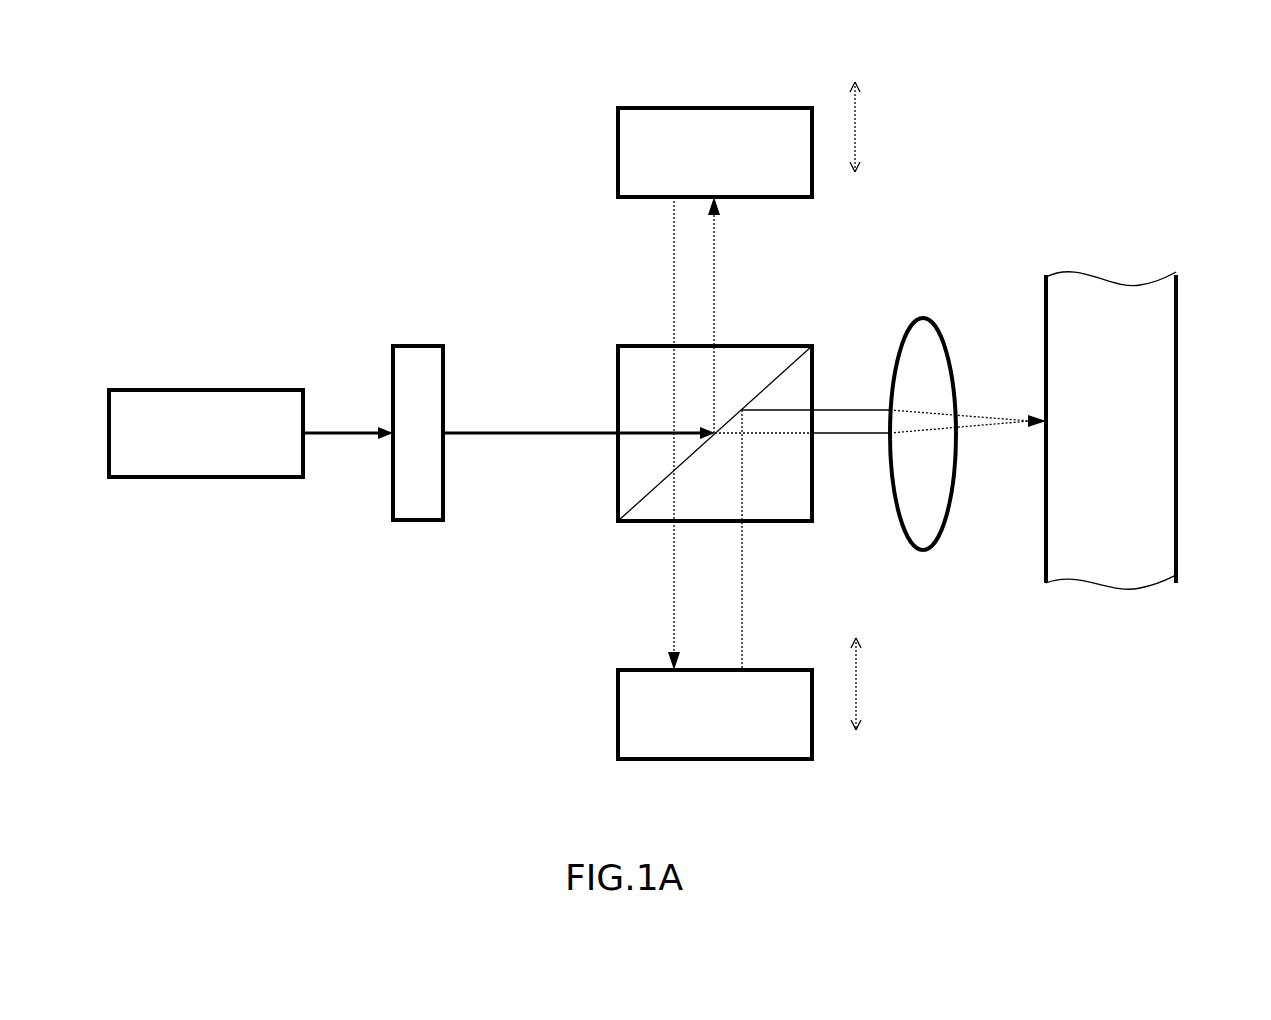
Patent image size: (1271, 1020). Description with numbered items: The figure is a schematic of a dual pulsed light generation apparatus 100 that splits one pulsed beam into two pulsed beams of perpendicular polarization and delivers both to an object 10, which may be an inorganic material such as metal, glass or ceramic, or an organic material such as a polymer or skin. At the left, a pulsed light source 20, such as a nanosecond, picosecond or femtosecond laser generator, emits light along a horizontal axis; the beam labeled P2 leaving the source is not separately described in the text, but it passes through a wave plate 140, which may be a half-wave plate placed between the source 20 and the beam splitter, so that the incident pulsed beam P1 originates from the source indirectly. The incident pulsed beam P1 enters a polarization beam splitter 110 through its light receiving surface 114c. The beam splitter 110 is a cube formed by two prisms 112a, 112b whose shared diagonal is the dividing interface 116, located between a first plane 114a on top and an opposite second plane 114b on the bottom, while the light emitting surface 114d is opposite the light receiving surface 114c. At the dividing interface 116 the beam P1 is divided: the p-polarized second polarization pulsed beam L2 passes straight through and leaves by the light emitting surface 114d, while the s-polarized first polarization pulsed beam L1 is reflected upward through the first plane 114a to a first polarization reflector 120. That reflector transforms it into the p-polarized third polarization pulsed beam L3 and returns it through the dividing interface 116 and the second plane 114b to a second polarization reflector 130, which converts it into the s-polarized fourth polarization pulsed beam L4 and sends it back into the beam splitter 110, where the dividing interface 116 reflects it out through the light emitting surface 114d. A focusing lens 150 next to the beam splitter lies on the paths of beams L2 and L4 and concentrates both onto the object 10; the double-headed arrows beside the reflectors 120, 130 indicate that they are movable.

The object 10 is at (1160, 363).
The pulsed light source 20 is at (213, 447).
The dual pulsed light generation apparatus 100 is at (998, 158).
The polarization beam splitter 110 is at (580, 275).
The prism 112a is at (625, 363).
The prism 112b is at (792, 513).
The first plane 114a is at (770, 345).
The second plane 114b is at (644, 522).
The light receiving surface 114c is at (615, 468).
The light emitting surface 114d is at (815, 370).
The dividing interface 116 is at (780, 355).
The first polarization reflector 120 is at (735, 165).
The second polarization reflector 130 is at (735, 726).
The wave plate 140 is at (415, 357).
The focusing lens 150 is at (930, 520).
The first polarization pulsed beam L1 is at (714, 232).
The second polarization pulsed beam L2 is at (845, 452).
The third polarization pulsed beam L3 is at (674, 238).
The fourth polarization pulsed beam L4 is at (867, 407).
The incident pulsed beam P1 is at (500, 437).
The second polarization P2 is at (337, 437).